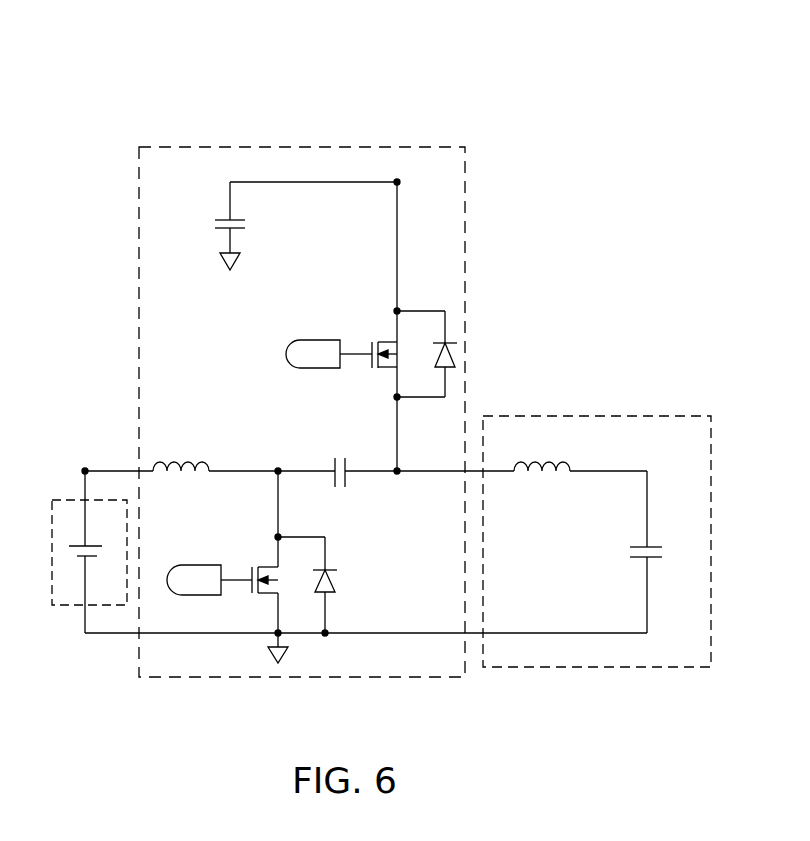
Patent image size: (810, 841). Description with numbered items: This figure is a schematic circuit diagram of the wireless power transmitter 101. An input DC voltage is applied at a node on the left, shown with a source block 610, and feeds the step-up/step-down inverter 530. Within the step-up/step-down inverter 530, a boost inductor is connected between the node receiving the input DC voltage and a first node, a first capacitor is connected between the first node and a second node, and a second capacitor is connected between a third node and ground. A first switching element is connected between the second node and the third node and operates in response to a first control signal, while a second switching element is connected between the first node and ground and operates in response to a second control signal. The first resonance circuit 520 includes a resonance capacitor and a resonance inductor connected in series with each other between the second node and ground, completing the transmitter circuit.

The wireless power transmitter 101 is at (424, 35).
The step-up/step-down inverter 530 is at (297, 146).
The first resonance circuit 520 is at (597, 415).
The power source 610 is at (67, 606).